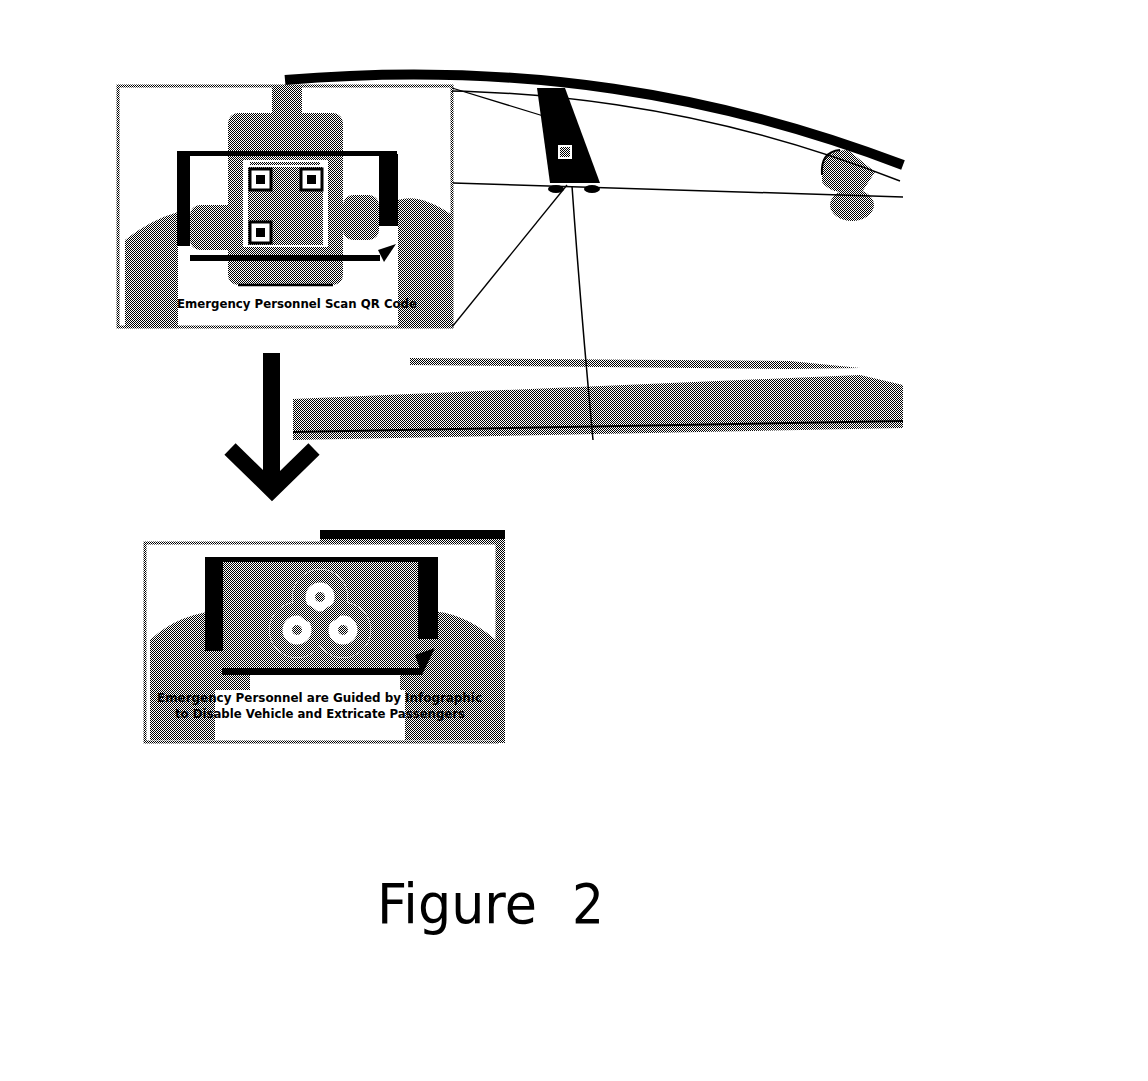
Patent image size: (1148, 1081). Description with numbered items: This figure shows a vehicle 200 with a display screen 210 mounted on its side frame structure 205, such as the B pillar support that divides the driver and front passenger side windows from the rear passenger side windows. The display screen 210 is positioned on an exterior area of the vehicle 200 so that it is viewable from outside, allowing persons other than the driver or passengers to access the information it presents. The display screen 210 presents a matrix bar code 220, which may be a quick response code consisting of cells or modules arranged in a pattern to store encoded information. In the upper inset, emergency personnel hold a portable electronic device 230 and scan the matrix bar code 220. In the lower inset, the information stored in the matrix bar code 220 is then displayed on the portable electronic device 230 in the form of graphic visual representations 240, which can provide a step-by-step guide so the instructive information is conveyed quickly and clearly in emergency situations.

The vehicle 200 is at (664, 58).
The side frame structure 205 is at (580, 118).
The display screen 210 is at (315, 135).
The matrix bar code 220 is at (244, 178).
The portable electronic device 230 is at (400, 177).
The graphic visual representations 240 is at (247, 580).